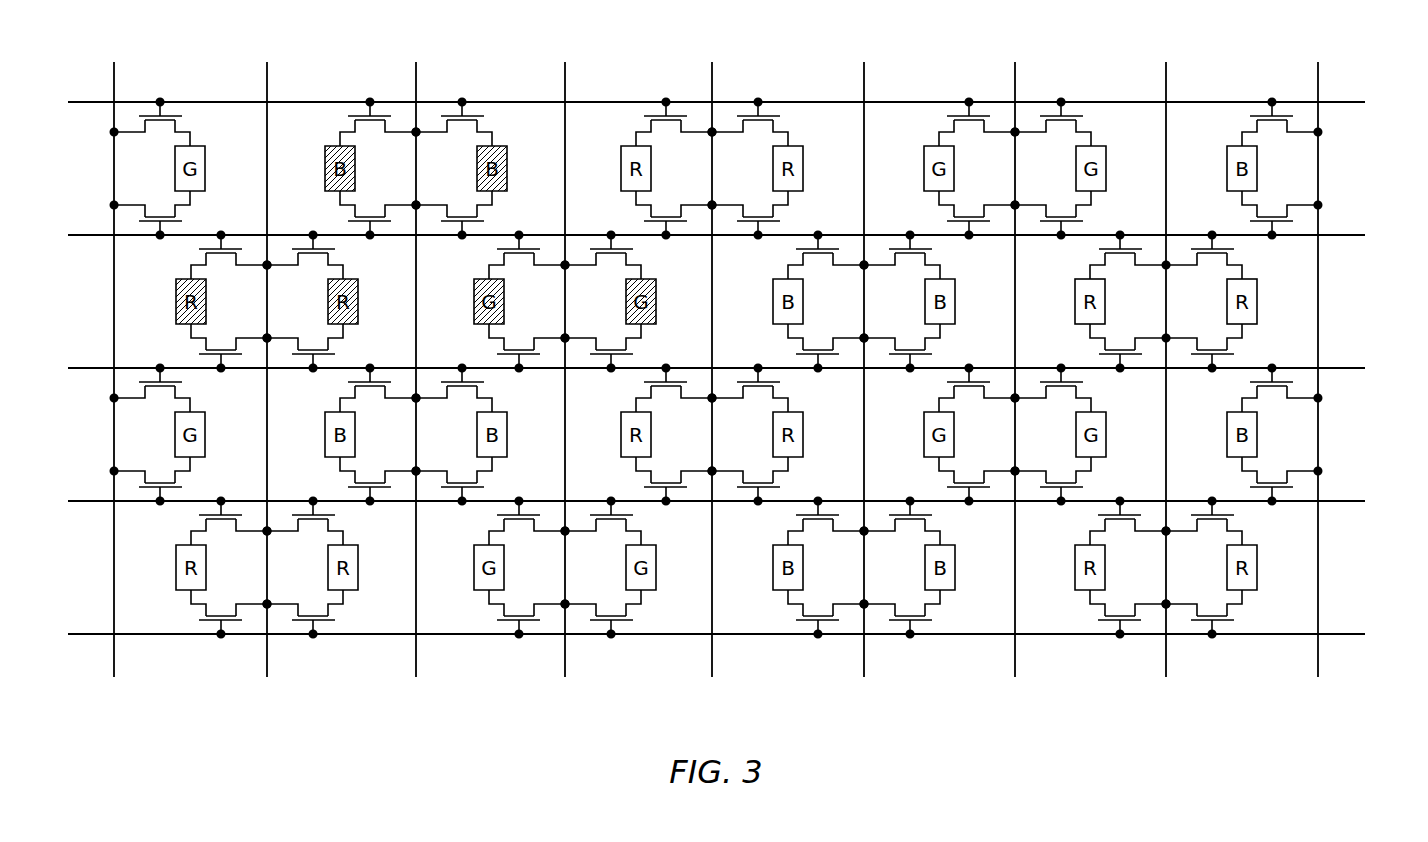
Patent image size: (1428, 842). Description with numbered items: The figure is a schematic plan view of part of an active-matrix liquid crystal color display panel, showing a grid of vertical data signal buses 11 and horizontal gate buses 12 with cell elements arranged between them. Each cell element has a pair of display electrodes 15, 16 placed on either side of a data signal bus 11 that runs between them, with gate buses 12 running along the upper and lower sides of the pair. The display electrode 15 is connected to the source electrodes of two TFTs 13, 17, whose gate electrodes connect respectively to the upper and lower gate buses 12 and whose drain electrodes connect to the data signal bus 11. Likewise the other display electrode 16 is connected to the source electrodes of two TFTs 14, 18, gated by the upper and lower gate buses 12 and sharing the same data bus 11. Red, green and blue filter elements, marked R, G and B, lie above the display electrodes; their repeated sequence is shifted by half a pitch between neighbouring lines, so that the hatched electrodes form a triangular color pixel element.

The data signal bus 11 is at (1318, 80).
The gate bus 12 is at (1365, 103).
The TFT 13 is at (1093, 258).
The TFT 14 is at (1232, 256).
The display electrode 15 is at (1075, 300).
The display electrode 16 is at (1257, 303).
The TFT 17 is at (1093, 352).
The TFT 18 is at (1230, 358).